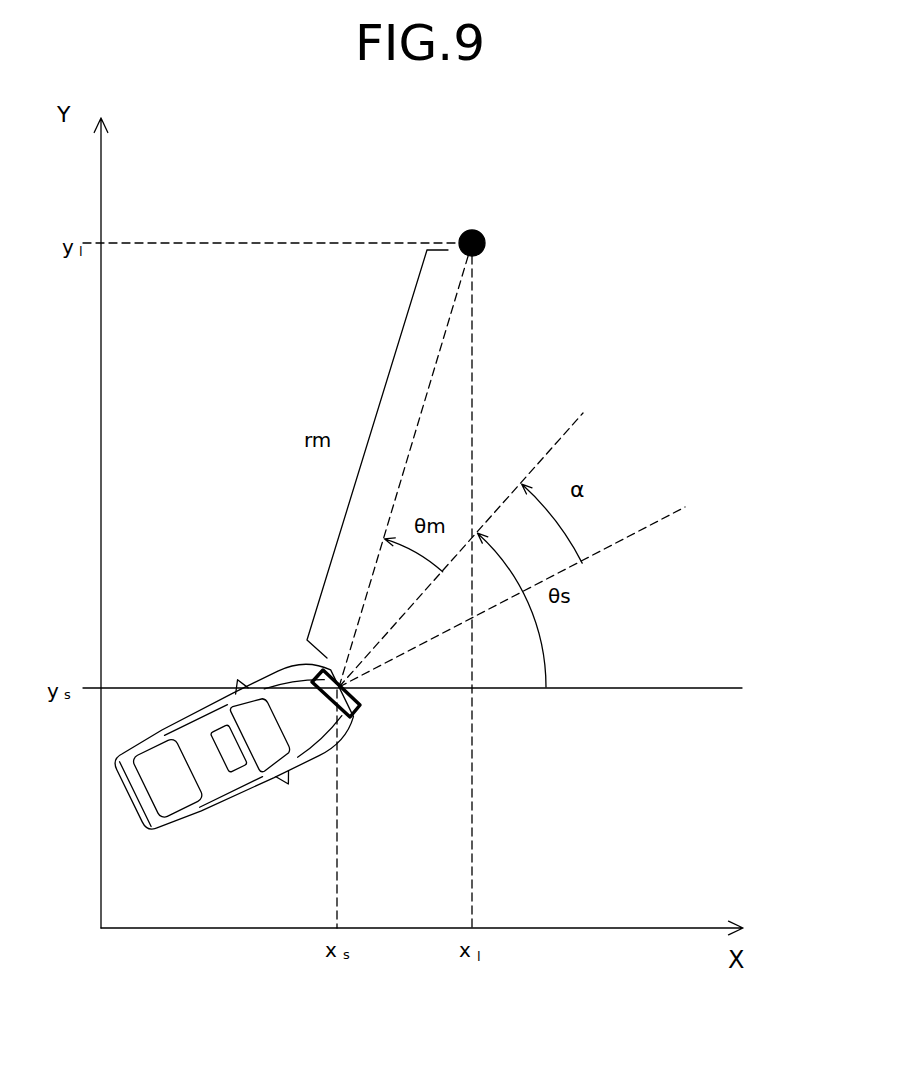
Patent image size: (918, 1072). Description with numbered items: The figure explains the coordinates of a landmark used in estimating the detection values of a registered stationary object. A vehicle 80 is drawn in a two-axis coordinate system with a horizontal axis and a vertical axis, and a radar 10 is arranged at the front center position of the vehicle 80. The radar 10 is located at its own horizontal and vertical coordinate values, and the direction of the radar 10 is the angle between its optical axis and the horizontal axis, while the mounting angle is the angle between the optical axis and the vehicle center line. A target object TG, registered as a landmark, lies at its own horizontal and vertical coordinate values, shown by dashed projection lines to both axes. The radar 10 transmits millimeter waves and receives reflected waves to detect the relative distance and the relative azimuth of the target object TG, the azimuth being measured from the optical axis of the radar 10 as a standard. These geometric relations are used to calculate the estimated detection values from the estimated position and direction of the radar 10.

The radar 10 is at (357, 712).
The vehicle 80 is at (243, 793).
The target object TG is at (485, 234).